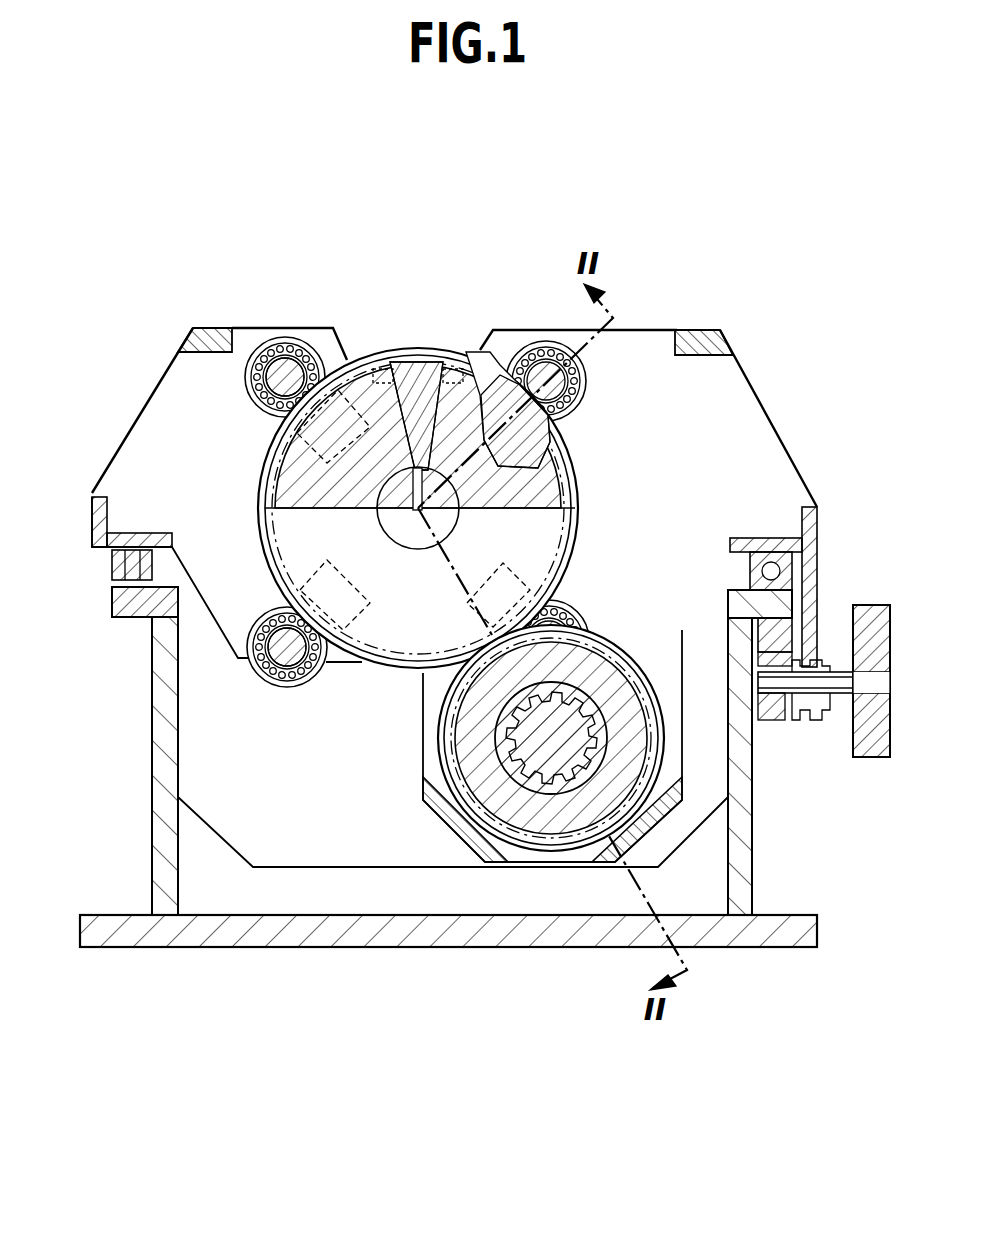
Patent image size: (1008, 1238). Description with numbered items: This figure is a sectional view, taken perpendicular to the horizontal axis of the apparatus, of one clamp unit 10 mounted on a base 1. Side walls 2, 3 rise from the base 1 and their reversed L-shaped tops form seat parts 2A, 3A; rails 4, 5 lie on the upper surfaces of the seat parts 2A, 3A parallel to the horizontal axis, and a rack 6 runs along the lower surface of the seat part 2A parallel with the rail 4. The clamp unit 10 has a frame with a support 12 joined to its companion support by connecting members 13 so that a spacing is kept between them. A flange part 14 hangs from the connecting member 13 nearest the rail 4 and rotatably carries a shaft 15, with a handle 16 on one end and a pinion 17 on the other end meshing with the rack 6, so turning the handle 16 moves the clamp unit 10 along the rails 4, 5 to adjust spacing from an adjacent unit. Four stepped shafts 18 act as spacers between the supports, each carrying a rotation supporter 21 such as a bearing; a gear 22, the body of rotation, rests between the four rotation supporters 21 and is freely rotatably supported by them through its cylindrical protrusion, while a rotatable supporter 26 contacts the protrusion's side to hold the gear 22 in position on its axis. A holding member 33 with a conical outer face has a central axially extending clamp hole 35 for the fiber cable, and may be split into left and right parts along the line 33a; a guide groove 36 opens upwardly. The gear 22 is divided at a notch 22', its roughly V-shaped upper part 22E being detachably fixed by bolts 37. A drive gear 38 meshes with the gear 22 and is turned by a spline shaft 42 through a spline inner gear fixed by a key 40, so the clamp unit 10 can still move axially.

The base 1 is at (518, 935).
The side wall 2 is at (750, 830).
The seat part 2A is at (790, 603).
The side wall 3 is at (160, 805).
The seat part 3A is at (120, 600).
The rail 4 is at (772, 565).
The rail 5 is at (116, 562).
The rack 6 is at (790, 640).
The clamp unit 10 is at (718, 318).
The support 12 is at (748, 398).
The connecting member 13 is at (215, 340).
The flange part 14 is at (808, 722).
The shaft 15 is at (828, 690).
The handle 16 is at (878, 752).
The pinion 17 is at (772, 720).
The stepped shaft 18 is at (285, 376).
The rotation supporter 21 is at (290, 352).
The gear 22 is at (453, 457).
The upper part 22E is at (418, 364).
The notch 22' is at (305, 468).
The rotatable supporter 26 is at (300, 445).
The holding member 33 is at (560, 530).
The dividing line 33a is at (404, 540).
The clamp hole 35 is at (412, 492).
The guide groove 36 is at (562, 488).
The bolt 37 is at (380, 368).
The drive gear 38 is at (604, 662).
The key 40 is at (500, 705).
The spline shaft 42 is at (546, 755).